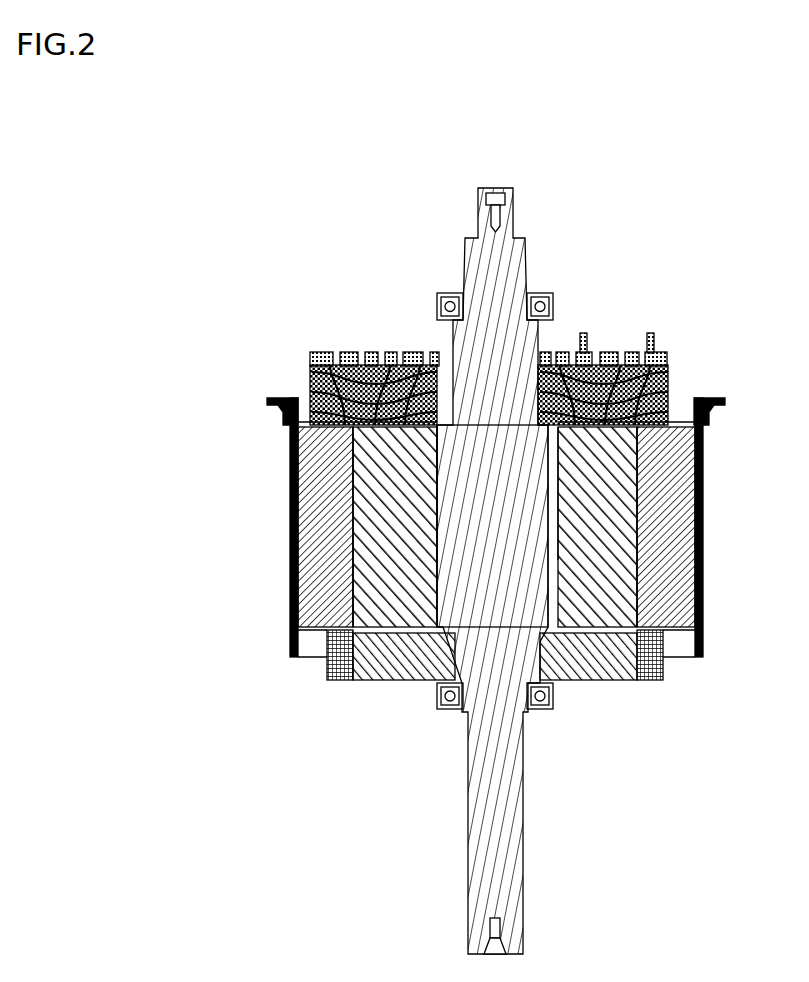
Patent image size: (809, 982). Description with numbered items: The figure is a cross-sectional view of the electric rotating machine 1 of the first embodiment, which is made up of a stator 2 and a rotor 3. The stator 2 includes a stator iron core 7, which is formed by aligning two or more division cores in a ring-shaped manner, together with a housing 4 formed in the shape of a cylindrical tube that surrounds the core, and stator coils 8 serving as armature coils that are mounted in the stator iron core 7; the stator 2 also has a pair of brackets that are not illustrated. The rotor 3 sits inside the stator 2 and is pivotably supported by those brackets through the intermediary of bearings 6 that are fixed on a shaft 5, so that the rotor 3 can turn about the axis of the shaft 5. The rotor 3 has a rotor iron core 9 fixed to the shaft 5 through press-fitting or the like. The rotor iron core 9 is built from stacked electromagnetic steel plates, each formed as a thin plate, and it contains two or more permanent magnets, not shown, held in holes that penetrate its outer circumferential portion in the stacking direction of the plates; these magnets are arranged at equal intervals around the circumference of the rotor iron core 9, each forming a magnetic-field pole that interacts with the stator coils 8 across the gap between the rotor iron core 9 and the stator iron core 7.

The electric rotating machine 1 is at (292, 318).
The stator 2 is at (287, 570).
The rotor 3 is at (497, 746).
The housing 4 is at (285, 423).
The shaft 5 is at (474, 291).
The bearings 6 is at (553, 307).
The stator iron core 7 is at (290, 493).
The stator coils 8 is at (668, 350).
The rotor iron core 9 is at (290, 603).